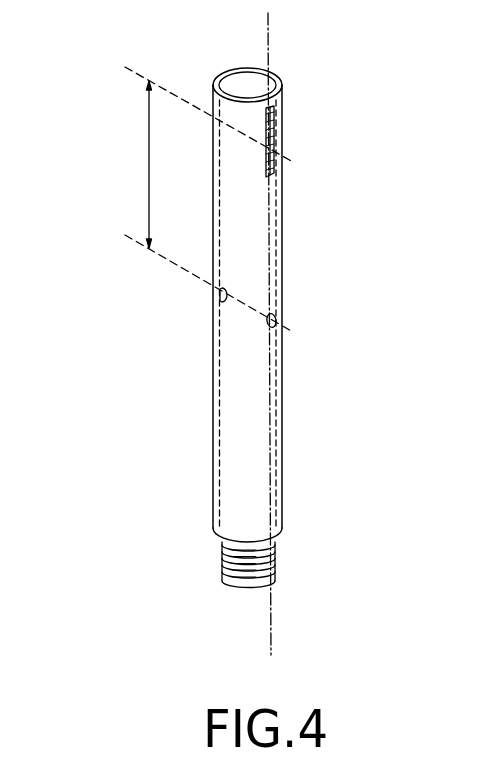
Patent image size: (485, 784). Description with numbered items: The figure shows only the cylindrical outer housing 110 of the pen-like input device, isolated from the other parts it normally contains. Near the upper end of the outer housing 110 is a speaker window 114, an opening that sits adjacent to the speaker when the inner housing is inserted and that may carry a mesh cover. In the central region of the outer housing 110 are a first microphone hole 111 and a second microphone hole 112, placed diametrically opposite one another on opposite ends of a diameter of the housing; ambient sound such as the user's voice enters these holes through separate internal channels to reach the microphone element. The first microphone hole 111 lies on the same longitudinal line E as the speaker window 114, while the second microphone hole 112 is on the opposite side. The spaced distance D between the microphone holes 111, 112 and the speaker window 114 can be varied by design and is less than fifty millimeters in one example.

The outer housing 110 is at (282, 200).
The first microphone hole 111 is at (276, 320).
The second microphone hole 112 is at (223, 289).
The speaker window 114 is at (274, 135).
The longitudinal line E is at (269, 52).
The spaced distance D is at (209, 199).